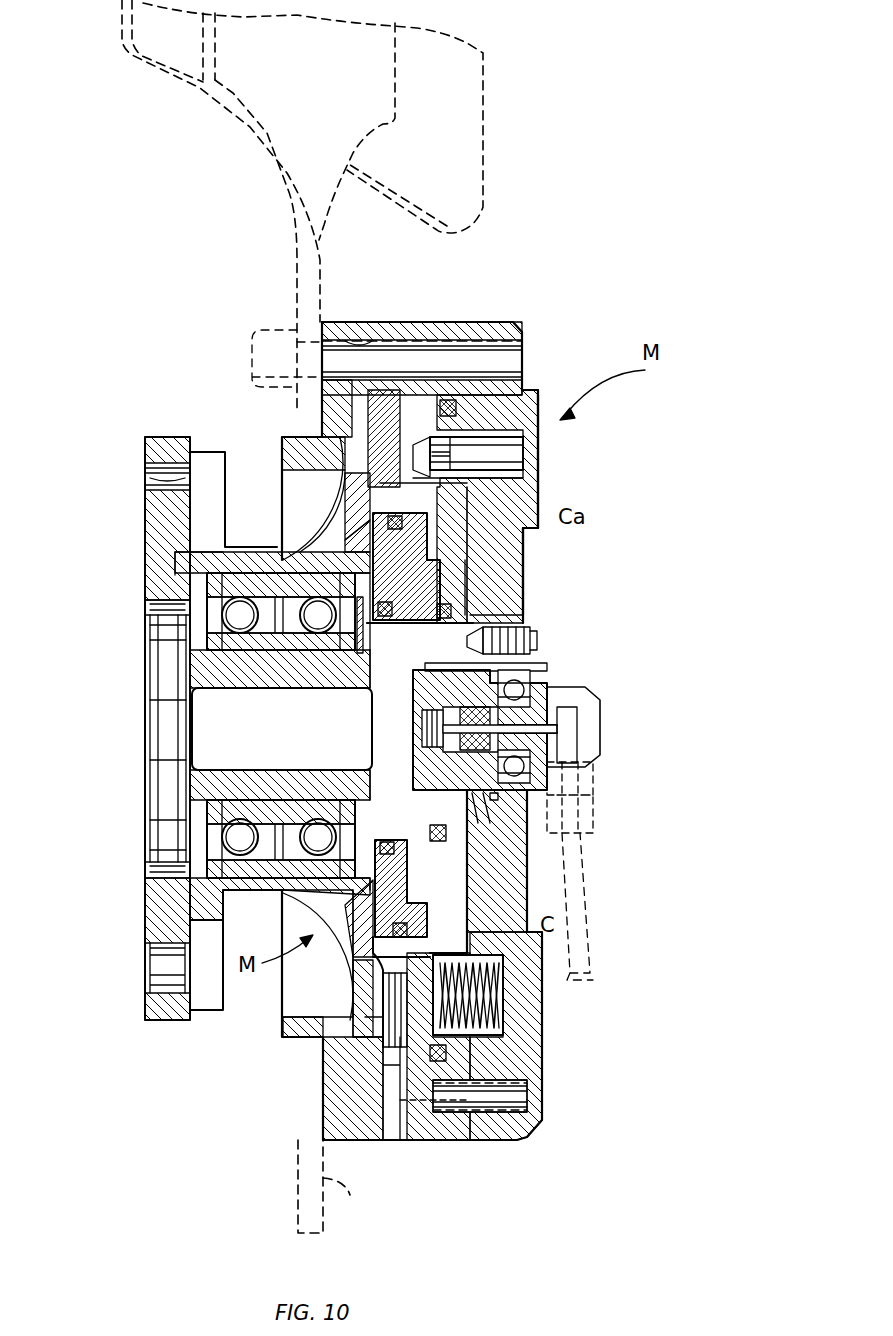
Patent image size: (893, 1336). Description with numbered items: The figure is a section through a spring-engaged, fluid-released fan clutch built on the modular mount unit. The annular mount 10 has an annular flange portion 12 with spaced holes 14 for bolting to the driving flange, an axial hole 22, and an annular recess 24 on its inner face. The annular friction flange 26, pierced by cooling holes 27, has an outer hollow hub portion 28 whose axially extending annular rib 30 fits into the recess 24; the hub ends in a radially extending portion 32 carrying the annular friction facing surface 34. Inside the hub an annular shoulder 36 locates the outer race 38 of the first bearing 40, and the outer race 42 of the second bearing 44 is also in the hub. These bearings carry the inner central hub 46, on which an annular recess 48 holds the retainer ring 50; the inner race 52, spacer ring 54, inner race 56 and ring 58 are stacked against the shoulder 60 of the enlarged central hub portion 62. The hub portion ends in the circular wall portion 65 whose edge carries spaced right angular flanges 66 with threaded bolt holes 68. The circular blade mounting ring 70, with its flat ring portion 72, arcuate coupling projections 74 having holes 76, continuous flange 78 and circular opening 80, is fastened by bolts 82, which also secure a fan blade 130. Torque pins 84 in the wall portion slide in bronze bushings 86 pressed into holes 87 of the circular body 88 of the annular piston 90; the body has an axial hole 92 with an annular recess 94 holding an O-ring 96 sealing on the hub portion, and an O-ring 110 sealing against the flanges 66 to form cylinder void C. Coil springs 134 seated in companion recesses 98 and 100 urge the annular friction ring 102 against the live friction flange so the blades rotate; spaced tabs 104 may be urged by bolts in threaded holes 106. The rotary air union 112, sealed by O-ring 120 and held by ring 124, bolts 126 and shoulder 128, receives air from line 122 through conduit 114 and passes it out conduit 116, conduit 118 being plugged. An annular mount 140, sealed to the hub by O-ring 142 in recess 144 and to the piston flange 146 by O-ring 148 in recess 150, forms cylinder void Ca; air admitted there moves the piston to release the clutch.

The annular mount 10 is at (146, 525).
The annular flange portion 12 is at (155, 577).
The spaced holes 14 is at (178, 440).
The axial hole 22 is at (165, 615).
The annular recess 24 is at (205, 545).
The annular friction flange 26 is at (300, 540).
The spaced holes 27 is at (360, 925).
The outer hollow hub portion 28 is at (350, 560).
The axially extending annular rib 30 is at (160, 555).
The radially extending portion 32 is at (330, 1045).
The annular friction facing surface 34 is at (335, 1065).
The annular shoulder 36 is at (406, 566).
The outer race 38 is at (320, 580).
The first bearing 40 is at (318, 726).
The outer race 42 is at (155, 602).
The second bearing 44 is at (240, 726).
The inner central hub 46 is at (170, 665).
The annular recess 48 is at (266, 725).
The retainer ring 50 is at (165, 637).
The inner race 52 is at (240, 690).
The spacer ring 54 is at (290, 690).
The inner race 56 is at (281, 728).
The ring 58 is at (392, 597).
The shoulder 60 is at (395, 660).
The enlarged central hub portion 62 is at (372, 718).
The circular wall portion 65 is at (495, 566).
The right angular flanges 66 is at (478, 335).
The threaded bolt hole 68 is at (505, 352).
The circular blade mounting ring 70 is at (282, 435).
The flat annular continuous ring portion 72 is at (318, 382).
The arcuate coupling projections 74 is at (352, 330).
The threaded bolt hole 76 is at (368, 338).
The continuous flange 78 is at (305, 448).
The circular opening 80 is at (320, 1022).
The bolts 82 is at (252, 334).
The torque pins 84 is at (490, 450).
The bronze bushing 86 is at (530, 420).
The hole 87 is at (525, 470).
The circular body 88 is at (528, 502).
The annular piston 90 is at (468, 583).
The axial hole 92 is at (530, 625).
The annular recess 94 is at (437, 604).
The O-ring 96 is at (520, 610).
The spaced circular recesses 98 is at (445, 950).
The spaced circular recesses 100 is at (520, 975).
The annular friction ring 102 is at (380, 1140).
The spaced tabs 104 is at (425, 1140).
The threaded hole 106 is at (527, 1104).
The O-ring 110 is at (448, 400).
The rotary air union 112 is at (575, 690).
The air conduit 114 is at (425, 735).
The air conduit 116 is at (410, 648).
The air conduit 118 is at (535, 877).
The O-ring 120 is at (547, 666).
The line 122 is at (598, 935).
The ring 124 is at (565, 845).
The bolts 126 is at (540, 640).
The shoulder 128 is at (440, 792).
The fan blade 130 is at (272, 158).
The coil spring 134 is at (475, 1000).
The annular mount 140 is at (520, 541).
The O-ring 142 is at (388, 842).
The annular recess 144 is at (375, 890).
The flange 146 is at (449, 553).
The O-ring 148 is at (350, 500).
The annular recess 150 is at (365, 548).